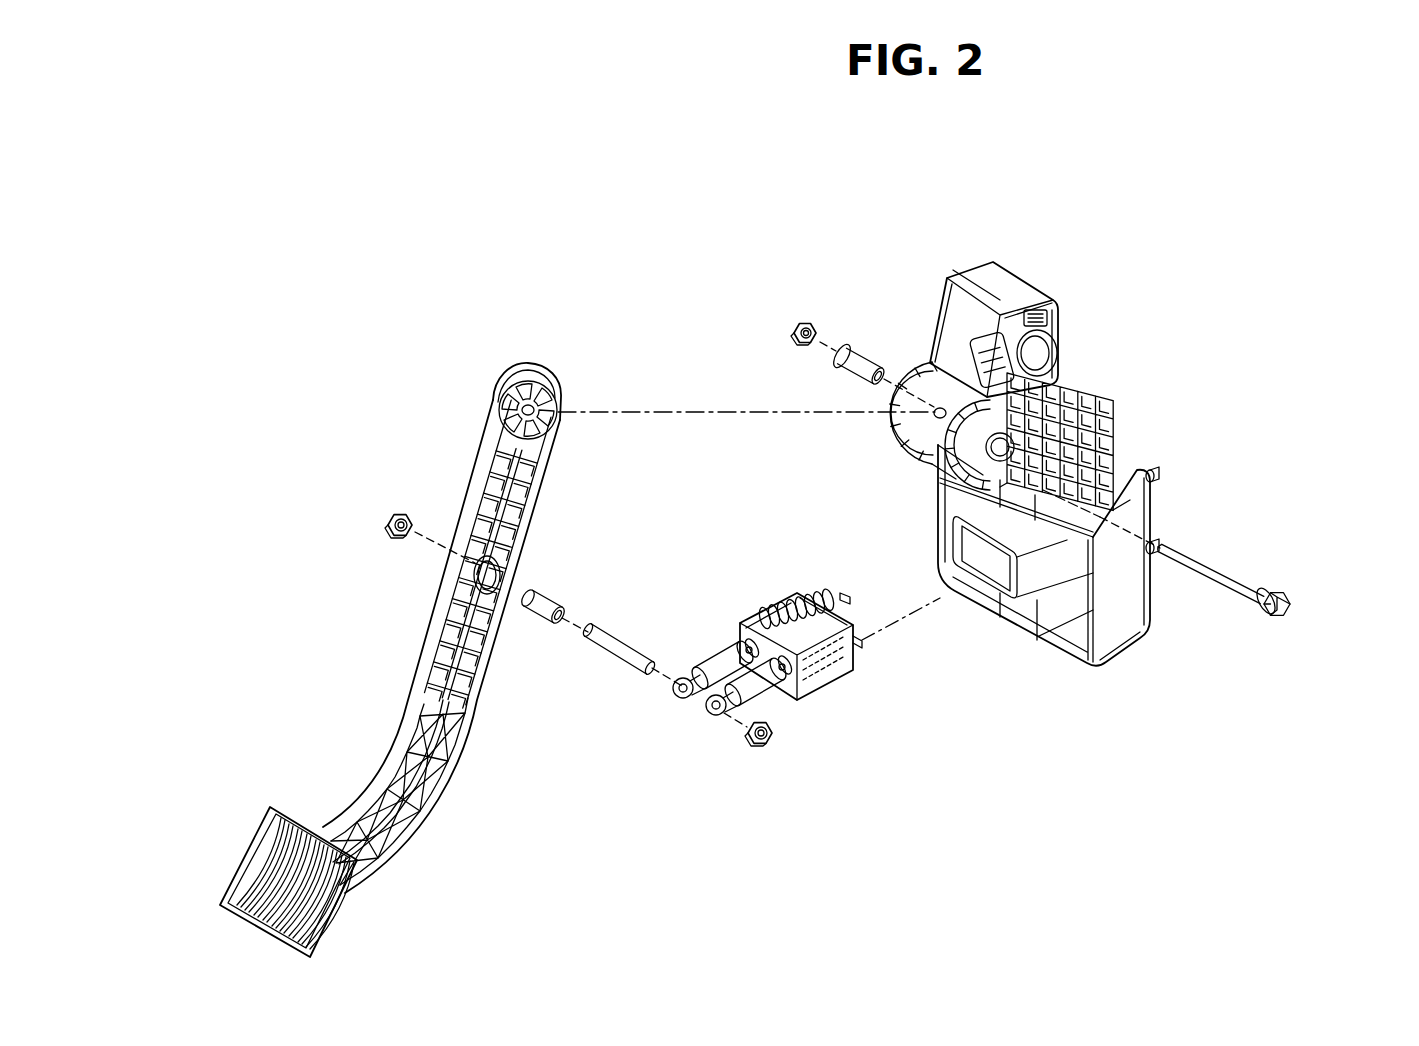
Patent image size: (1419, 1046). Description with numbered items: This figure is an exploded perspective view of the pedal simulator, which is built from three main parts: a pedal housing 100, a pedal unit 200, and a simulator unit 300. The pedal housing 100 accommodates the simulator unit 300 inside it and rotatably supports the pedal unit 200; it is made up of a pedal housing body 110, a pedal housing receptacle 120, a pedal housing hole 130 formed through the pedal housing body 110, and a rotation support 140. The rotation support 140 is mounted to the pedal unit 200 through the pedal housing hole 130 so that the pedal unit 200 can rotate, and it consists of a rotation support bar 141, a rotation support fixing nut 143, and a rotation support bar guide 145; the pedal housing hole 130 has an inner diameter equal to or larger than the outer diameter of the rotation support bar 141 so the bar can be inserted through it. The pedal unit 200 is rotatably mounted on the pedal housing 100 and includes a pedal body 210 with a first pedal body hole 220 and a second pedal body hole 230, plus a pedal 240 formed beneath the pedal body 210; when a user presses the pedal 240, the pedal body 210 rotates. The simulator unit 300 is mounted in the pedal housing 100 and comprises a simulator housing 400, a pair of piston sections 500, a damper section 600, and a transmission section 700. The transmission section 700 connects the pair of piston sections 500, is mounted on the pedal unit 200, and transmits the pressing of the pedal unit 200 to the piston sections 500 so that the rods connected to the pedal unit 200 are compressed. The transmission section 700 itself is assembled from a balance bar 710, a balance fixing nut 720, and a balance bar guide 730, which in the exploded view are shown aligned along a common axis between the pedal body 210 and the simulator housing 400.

The pedal housing 100 is at (1200, 375).
The pedal housing body 110 is at (1125, 625).
The pedal housing receptacle 120 is at (995, 580).
The pedal housing hole 130 is at (1047, 325).
The rotation support 140 is at (1306, 638).
The rotation support bar 141 is at (1230, 575).
The rotation support fixing nut 143 is at (805, 322).
The rotation support bar guide 145 is at (855, 345).
The pedal unit 200 is at (252, 647).
The pedal body 210 is at (385, 757).
The first pedal body hole 220 is at (533, 385).
The second pedal body hole 230 is at (500, 550).
The pedal 240 is at (265, 842).
The simulator unit 300 is at (876, 778).
The simulator housing 400 is at (852, 660).
The piston section 500 is at (742, 670).
The damper section 600 is at (800, 612).
The transmission section 700 is at (661, 806).
The balance bar 710 is at (611, 667).
The balance fixing nut 720 is at (398, 540).
The balance bar guide 730 is at (546, 627).